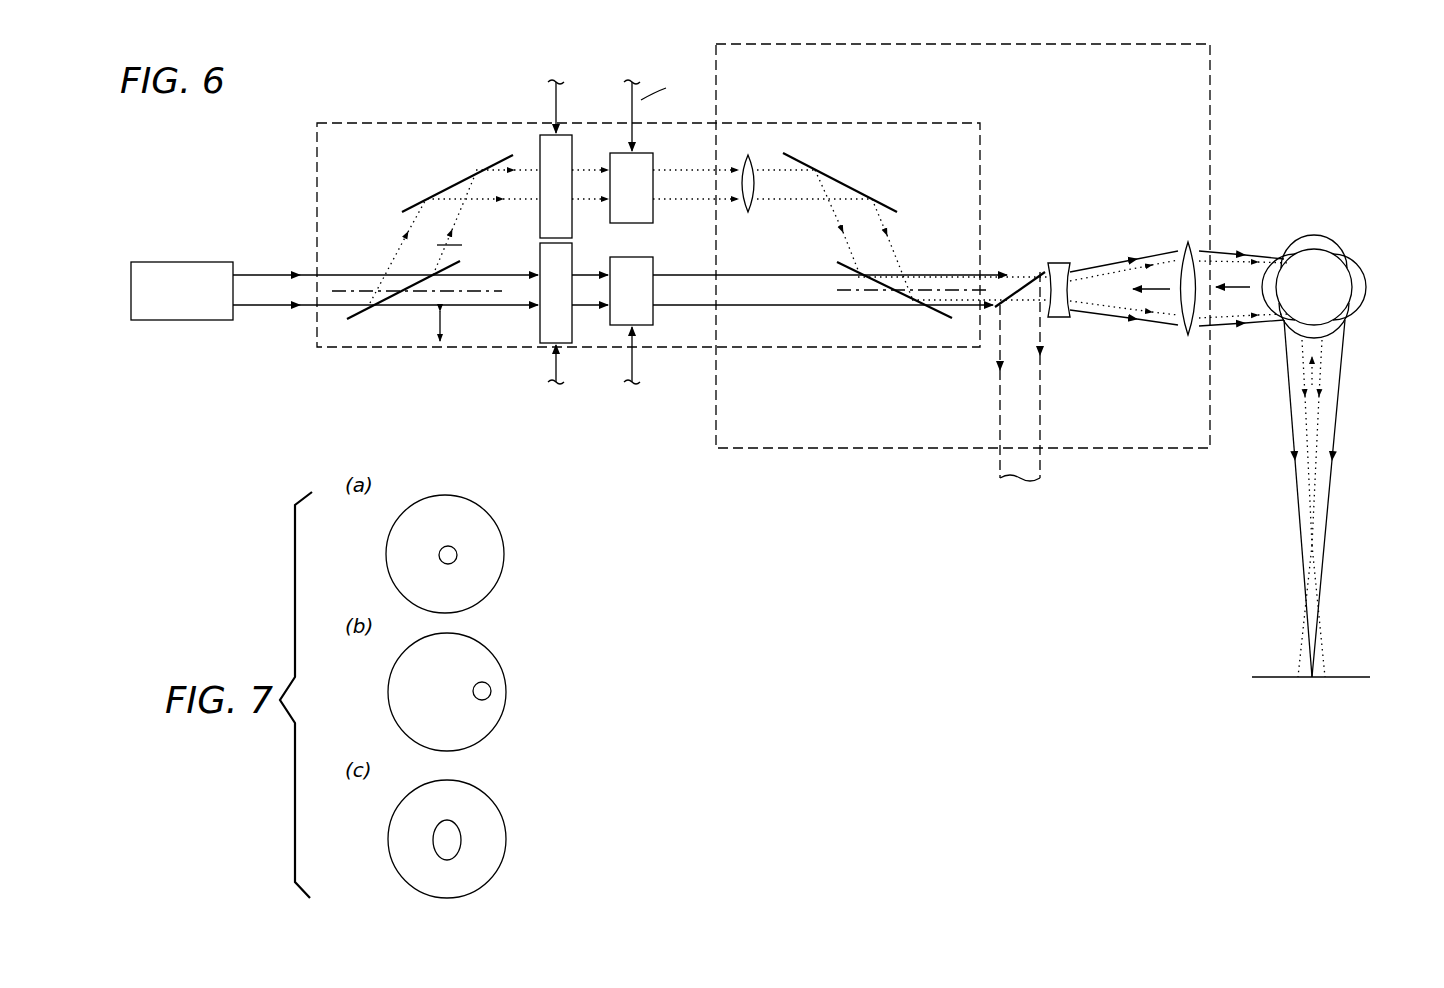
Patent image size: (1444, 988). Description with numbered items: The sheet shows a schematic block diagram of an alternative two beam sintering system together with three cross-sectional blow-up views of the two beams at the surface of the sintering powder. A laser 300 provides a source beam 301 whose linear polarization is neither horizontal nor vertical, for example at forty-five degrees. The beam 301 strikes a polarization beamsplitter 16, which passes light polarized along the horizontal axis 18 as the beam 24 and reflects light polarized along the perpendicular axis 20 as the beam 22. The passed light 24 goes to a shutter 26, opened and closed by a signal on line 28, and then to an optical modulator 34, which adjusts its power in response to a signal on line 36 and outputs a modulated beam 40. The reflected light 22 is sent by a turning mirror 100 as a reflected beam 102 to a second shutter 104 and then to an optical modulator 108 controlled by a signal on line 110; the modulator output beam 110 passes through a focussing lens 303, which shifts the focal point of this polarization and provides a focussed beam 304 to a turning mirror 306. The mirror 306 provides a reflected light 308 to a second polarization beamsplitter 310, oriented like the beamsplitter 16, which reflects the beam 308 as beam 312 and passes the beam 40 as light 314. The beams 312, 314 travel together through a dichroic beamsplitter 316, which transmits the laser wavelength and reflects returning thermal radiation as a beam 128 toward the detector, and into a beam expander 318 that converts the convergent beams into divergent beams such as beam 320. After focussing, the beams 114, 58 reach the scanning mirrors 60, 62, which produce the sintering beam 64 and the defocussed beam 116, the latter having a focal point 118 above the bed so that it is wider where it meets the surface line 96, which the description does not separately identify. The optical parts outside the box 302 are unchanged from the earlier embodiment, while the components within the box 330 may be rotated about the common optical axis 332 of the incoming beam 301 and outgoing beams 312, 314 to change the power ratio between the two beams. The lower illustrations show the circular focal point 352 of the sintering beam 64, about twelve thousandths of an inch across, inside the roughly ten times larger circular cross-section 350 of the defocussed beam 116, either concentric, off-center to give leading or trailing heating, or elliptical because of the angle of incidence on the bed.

In FIG. 6, the laser 300 is at (170, 320).
In FIG. 6, the source beam 301 is at (247, 300).
In FIG. 6, the box 330 is at (315, 150).
In FIG. 6, the box 302 is at (820, 458).
In FIG. 6, the common optical axis 332 is at (350, 291).
In FIG. 6, the polarization beamsplitter 16 is at (347, 320).
In FIG. 6, the horizontal polarization axis 18 is at (438, 323).
In FIG. 6, the perpendicular polarization axis 20 is at (520, 143).
In FIG. 6, the reflected light 22 is at (464, 243).
In FIG. 6, the passed light 24 is at (485, 295).
In FIG. 6, the shutter 26 is at (574, 249).
In FIG. 6, the line 28 is at (552, 375).
In FIG. 6, the optical modulator 34 is at (655, 262).
In FIG. 6, the line 36 is at (640, 380).
In FIG. 6, the modulated light beam 40 is at (677, 293).
In FIG. 6, the turning mirror 100 is at (428, 198).
In FIG. 6, the reflected beam 102 is at (482, 195).
In FIG. 6, the shutter 104 is at (552, 100).
In FIG. 6, the optical modulator 108 is at (652, 153).
In FIG. 6, the line 110 is at (670, 203).
In FIG. 6, the focussing lens 303 is at (750, 160).
In FIG. 6, the focussed beam 304 is at (780, 188).
In FIG. 6, the turning mirror 306 is at (887, 198).
In FIG. 6, the reflected light 308 is at (887, 250).
In FIG. 6, the polarization beamsplitter 310 is at (845, 263).
In FIG. 6, the beam 312 is at (990, 280).
In FIG. 6, the light 314 is at (972, 272).
In FIG. 6, the dichroic beamsplitter 316 is at (1045, 272).
In FIG. 6, the beam expander 318 is at (1063, 263).
In FIG. 6, the divergent beam 320 is at (1160, 258).
In FIG. 6, the reflected beam 128 is at (1023, 403).
In FIG. 6, the focussed beam 114 is at (1223, 258).
In FIG. 6, the focussed beam 58 is at (1228, 322).
In FIG. 6, the scanning mirror 60 is at (1368, 287).
In FIG. 6, the scanning mirror 62 is at (1314, 237).
In FIG. 6, the sintering beam 64 is at (1327, 440).
In FIG. 6, the focal point 118 is at (1310, 495).
In FIG. 6, the defocussed beam 116 is at (1298, 650).
In FIG. 6, the retina 96 is at (1314, 672).
In FIG. 7, the circular cross-section 350 is at (482, 527).
In FIG. 7, the circular focal point 352 is at (440, 552).